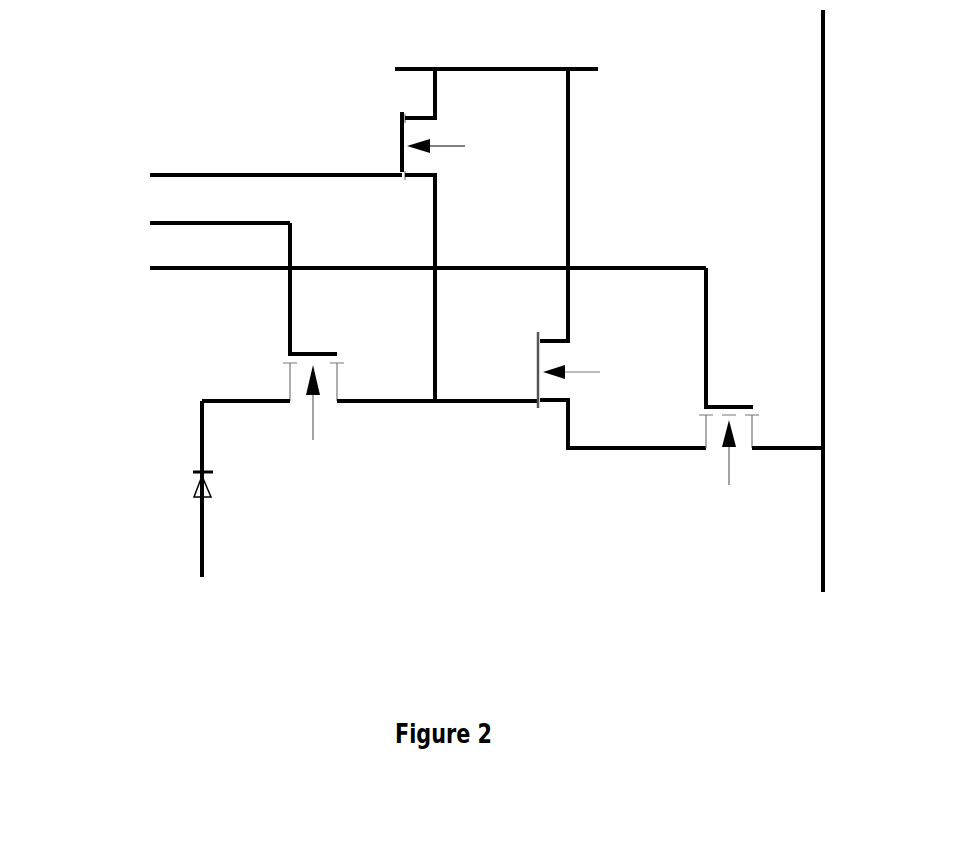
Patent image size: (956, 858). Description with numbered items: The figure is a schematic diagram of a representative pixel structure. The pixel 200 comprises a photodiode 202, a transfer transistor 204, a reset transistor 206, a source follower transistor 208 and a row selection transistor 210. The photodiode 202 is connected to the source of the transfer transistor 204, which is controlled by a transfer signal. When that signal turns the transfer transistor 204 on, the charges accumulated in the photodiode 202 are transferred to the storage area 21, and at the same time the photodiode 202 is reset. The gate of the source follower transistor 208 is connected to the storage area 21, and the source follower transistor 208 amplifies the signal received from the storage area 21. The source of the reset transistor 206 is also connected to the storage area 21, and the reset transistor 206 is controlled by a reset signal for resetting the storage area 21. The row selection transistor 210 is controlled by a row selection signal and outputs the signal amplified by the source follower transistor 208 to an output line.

The pixel 200 is at (446, 330).
The photodiode 202 is at (224, 488).
The transfer transistor 204 is at (340, 436).
The reset transistor 206 is at (386, 117).
The source follower transistor 208 is at (538, 436).
The row selection transistor 210 is at (737, 375).
The storage area 21 is at (442, 396).